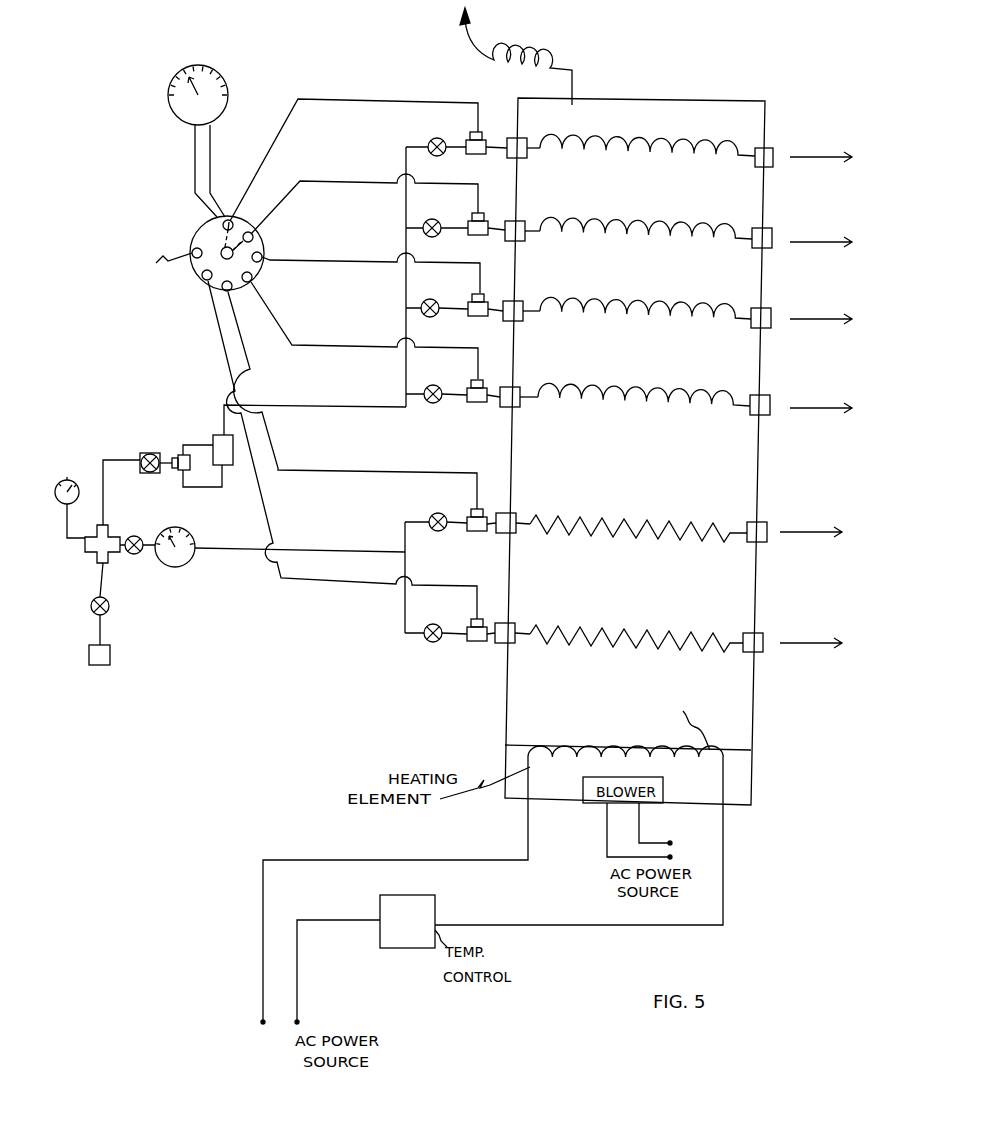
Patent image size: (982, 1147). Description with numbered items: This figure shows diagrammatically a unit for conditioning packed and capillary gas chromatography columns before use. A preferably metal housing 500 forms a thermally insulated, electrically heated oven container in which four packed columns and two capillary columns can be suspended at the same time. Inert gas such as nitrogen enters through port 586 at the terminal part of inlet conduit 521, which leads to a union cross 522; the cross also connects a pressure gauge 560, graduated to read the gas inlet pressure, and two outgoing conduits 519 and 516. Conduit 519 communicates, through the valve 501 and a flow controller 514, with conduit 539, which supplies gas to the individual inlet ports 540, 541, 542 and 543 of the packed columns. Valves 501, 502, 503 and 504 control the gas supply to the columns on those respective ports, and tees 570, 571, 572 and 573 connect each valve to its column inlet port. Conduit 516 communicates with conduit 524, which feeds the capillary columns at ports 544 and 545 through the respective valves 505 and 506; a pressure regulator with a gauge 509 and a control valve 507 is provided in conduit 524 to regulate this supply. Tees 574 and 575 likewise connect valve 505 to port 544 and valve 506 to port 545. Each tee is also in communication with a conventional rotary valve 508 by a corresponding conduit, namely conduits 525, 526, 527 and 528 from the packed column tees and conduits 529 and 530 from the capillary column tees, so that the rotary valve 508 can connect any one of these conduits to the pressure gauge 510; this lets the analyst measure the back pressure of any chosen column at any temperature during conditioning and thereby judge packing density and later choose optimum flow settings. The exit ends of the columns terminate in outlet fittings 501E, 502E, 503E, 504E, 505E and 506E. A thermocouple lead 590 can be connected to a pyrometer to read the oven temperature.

The housing 500 is at (692, 99).
The valve 501 is at (432, 141).
The valve 502 is at (428, 219).
The valve 503 is at (425, 301).
The valve 504 is at (426, 388).
The valve 505 is at (432, 515).
The valve 506 is at (430, 625).
The control valve 507 is at (138, 555).
The rotary valve 508 is at (200, 282).
The gauge 509 is at (183, 565).
The pressure gauge 510 is at (224, 74).
The flow controller 514 is at (196, 461).
The conduit 516 is at (120, 540).
The conduit 519 is at (106, 475).
The inlet conduit 521 is at (111, 606).
The union cross 522 is at (94, 549).
The conduit 524 is at (227, 551).
The conduit 525 is at (304, 101).
The conduit 526 is at (301, 182).
The conduit 527 is at (299, 259).
The conduit 528 is at (313, 345).
The conduit 529 is at (348, 474).
The conduit 530 is at (286, 585).
The conduit 539 is at (294, 407).
The port 540 is at (527, 154).
The port 541 is at (525, 240).
The port 542 is at (525, 321).
The port 543 is at (525, 406).
The port 544 is at (519, 533).
The port 545 is at (517, 644).
The pressure gauge 560 is at (44, 486).
The tee 570 is at (487, 163).
The tee 571 is at (483, 241).
The tee 572 is at (490, 331).
The tee 573 is at (489, 417).
The tee 574 is at (489, 541).
The tee 575 is at (489, 653).
The port 586 is at (110, 657).
The thermocouple lead 590 is at (574, 78).
The outlet port 501E is at (786, 172).
The outlet port 502E is at (775, 250).
The outlet port 503E is at (774, 328).
The outlet port 504E is at (770, 415).
The outlet port 505E is at (770, 544).
The outlet port 506E is at (764, 659).